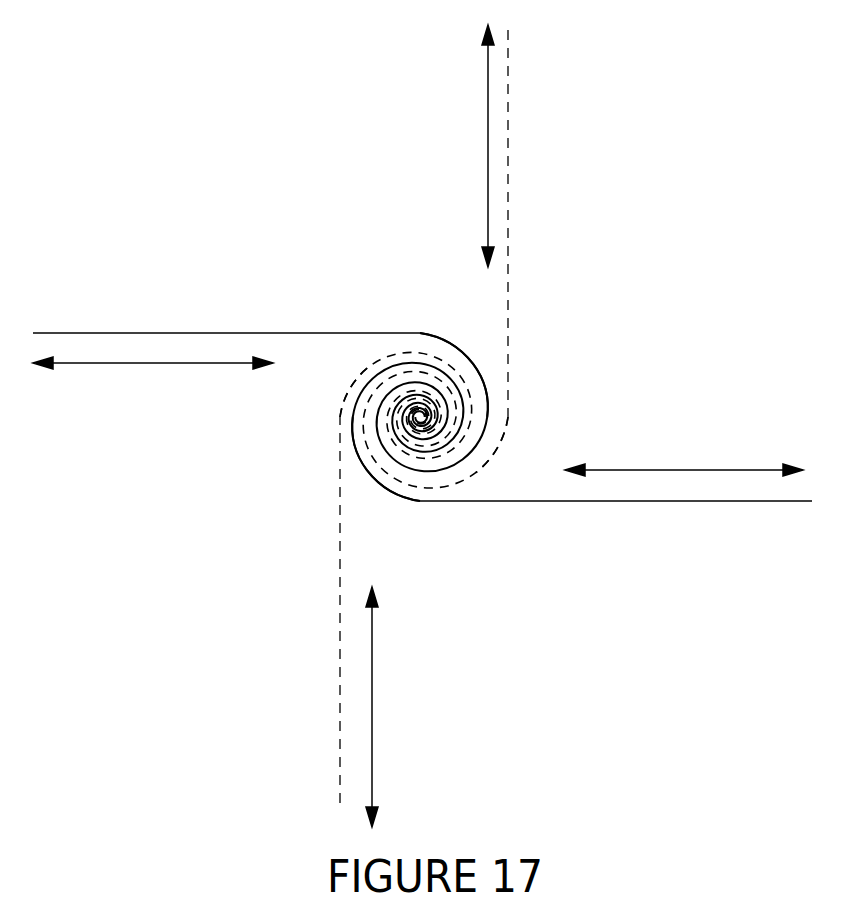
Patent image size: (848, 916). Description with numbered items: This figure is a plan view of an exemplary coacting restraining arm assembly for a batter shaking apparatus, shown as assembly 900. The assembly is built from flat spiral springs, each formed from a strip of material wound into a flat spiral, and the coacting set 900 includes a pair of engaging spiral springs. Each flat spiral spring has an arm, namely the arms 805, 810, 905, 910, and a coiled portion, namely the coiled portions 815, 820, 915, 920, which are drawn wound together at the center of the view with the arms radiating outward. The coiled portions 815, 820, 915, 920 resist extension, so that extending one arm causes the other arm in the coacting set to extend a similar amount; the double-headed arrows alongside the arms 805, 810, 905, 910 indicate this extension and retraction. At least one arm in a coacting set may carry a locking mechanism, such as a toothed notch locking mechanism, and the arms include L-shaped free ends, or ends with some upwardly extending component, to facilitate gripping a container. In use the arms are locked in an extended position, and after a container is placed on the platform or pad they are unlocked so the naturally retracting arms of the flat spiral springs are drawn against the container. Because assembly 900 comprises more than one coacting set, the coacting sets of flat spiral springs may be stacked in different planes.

The arm 805 is at (605, 501).
The arm 810 is at (193, 333).
The coiled portion 815 is at (367, 463).
The coiled portion 820 is at (450, 340).
The coacting set 900 is at (528, 585).
The arm 905 is at (508, 232).
The arm 910 is at (341, 717).
The coiled portion 915 is at (477, 467).
The coiled portion 920 is at (353, 382).